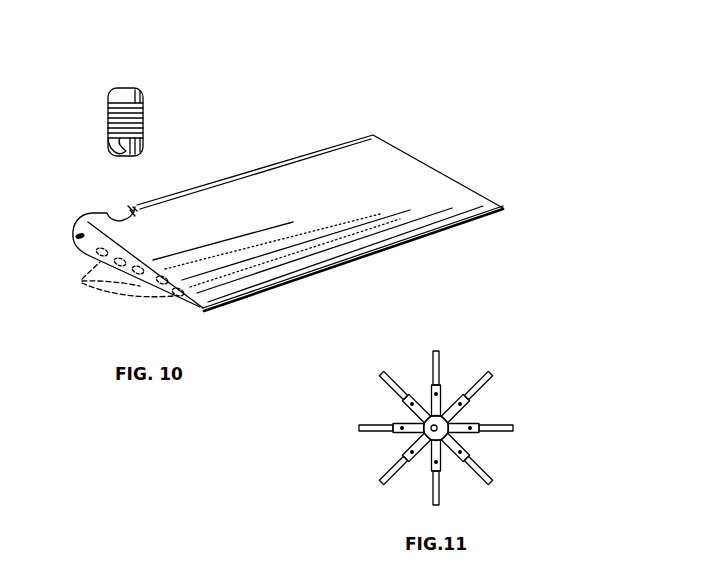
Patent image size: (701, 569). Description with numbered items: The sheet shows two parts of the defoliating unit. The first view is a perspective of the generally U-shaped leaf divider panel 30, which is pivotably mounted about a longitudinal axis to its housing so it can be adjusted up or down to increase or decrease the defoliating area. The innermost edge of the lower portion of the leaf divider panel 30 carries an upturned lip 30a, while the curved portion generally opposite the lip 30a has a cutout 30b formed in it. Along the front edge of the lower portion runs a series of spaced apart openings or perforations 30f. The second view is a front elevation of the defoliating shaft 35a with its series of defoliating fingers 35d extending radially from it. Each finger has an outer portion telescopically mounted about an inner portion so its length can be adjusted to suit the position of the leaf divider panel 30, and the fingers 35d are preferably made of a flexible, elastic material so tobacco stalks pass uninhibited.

In FIG. 10, the leaf divider panel 30 is at (245, 188).
In FIG. 10, the upturned lip 30a is at (372, 252).
In FIG. 10, the cutout 30b is at (137, 205).
In FIG. 10, the openings or perforations 30f is at (124, 265).
In FIG. 11, the defoliating shaft 35a is at (446, 433).
In FIG. 11, the defoliating fingers 35d is at (388, 423).